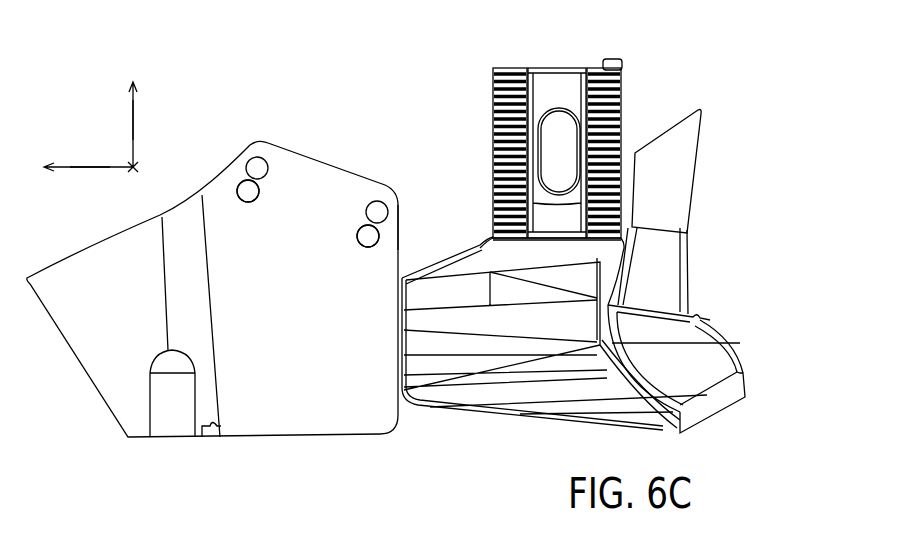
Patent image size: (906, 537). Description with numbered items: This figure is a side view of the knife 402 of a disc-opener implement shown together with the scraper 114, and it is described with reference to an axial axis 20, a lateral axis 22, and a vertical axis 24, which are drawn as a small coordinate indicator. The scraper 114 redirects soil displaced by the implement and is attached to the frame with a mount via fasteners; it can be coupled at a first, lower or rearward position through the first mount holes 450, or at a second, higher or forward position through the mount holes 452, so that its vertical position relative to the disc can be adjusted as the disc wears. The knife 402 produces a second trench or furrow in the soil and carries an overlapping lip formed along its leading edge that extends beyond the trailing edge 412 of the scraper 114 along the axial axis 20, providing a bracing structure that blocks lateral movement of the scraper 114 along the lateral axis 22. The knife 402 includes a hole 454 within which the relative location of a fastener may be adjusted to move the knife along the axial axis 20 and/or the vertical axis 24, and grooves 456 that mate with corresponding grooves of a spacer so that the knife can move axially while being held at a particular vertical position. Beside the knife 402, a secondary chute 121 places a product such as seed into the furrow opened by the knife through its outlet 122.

The axial axis 20 is at (92, 167).
The lateral axis 22 is at (133, 172).
The vertical axis 24 is at (133, 130).
The scraper 114 is at (331, 404).
The secondary chute 121 is at (677, 187).
The outlet 122 is at (690, 380).
The knife 402 is at (493, 418).
The trailing edge 412 is at (400, 228).
The first mount holes 450 is at (376, 203).
The mount holes 452 is at (363, 237).
The hole 454 is at (562, 133).
The grooves 456 is at (510, 157).